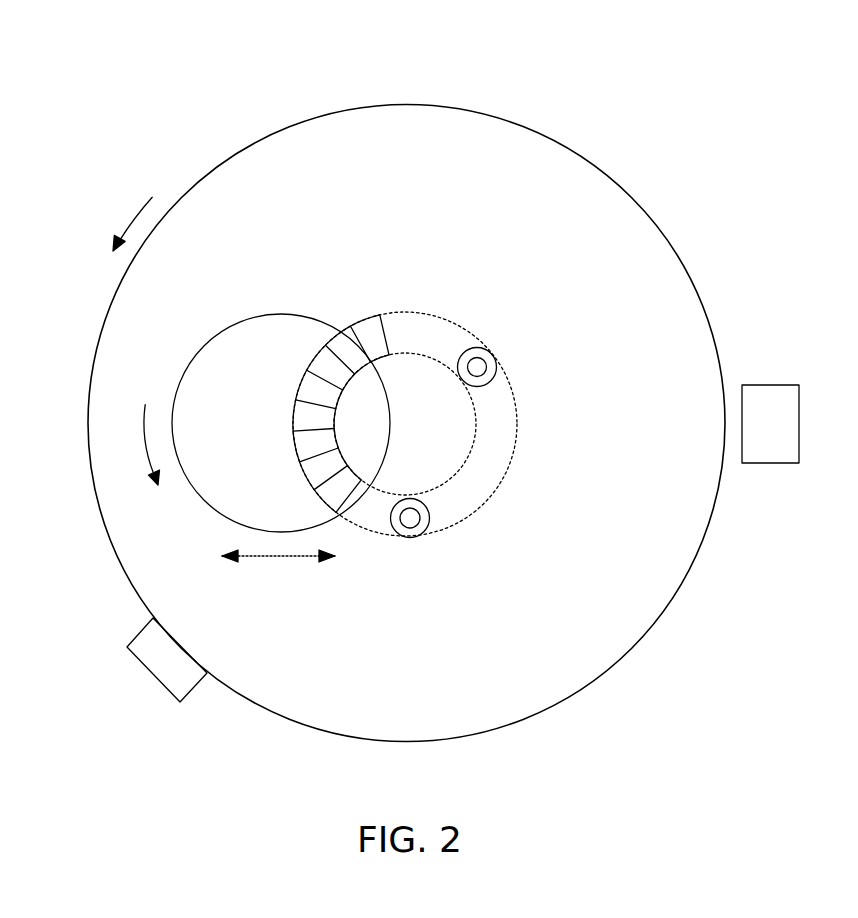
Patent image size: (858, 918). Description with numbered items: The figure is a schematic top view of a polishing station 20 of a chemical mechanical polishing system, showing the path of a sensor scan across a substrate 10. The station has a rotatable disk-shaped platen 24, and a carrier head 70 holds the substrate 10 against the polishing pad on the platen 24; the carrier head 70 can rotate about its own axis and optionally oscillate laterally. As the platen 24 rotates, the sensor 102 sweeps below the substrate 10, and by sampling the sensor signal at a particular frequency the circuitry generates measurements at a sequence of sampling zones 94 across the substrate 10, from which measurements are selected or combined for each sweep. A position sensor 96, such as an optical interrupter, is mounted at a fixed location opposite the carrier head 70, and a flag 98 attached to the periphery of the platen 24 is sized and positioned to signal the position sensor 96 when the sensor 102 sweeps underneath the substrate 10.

The polishing station 20 is at (203, 58).
The platen 24 is at (624, 189).
The carrier head 70 is at (206, 336).
The sampling zones 94 is at (377, 313).
The substrate 10 is at (440, 533).
The sensor 102 is at (483, 350).
The flag 98 is at (772, 385).
The position sensor 96 is at (152, 678).